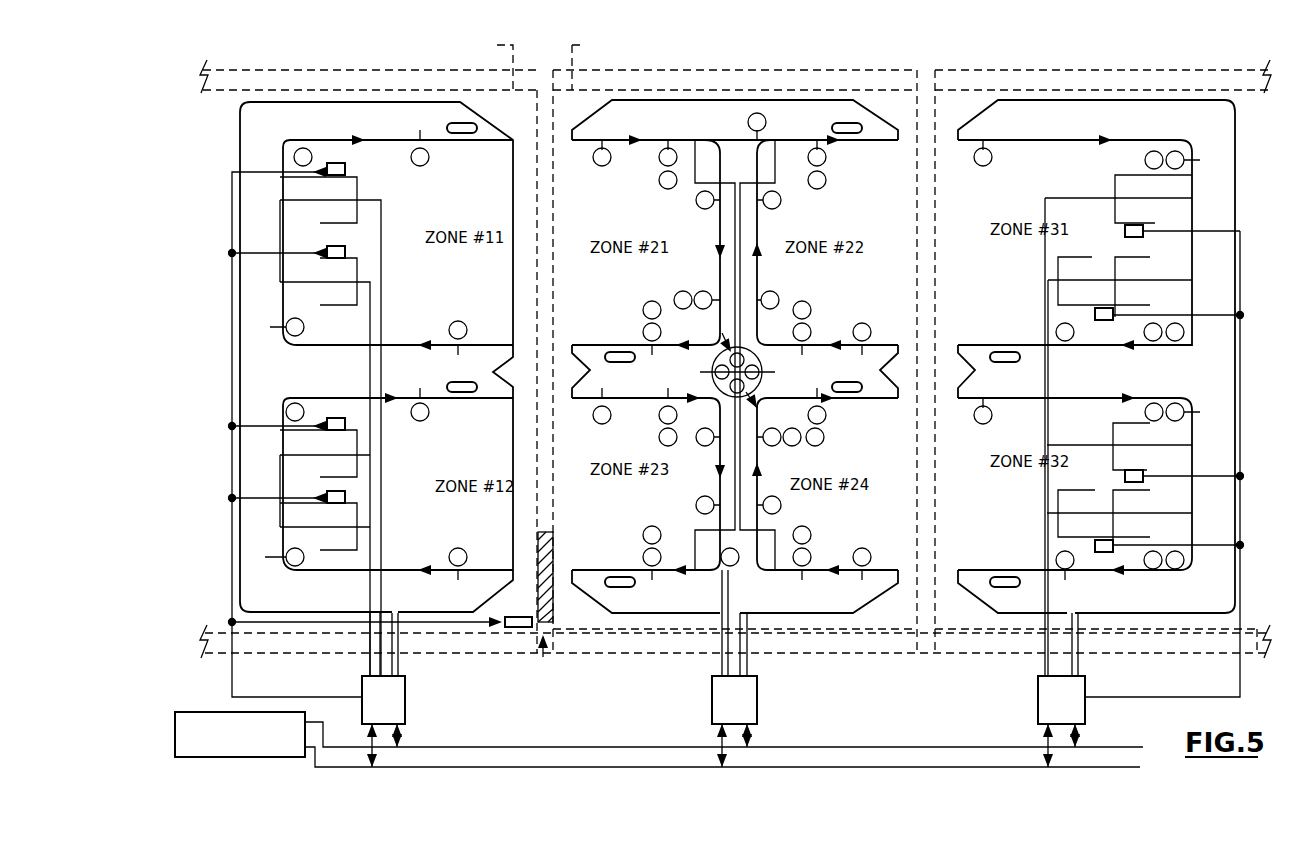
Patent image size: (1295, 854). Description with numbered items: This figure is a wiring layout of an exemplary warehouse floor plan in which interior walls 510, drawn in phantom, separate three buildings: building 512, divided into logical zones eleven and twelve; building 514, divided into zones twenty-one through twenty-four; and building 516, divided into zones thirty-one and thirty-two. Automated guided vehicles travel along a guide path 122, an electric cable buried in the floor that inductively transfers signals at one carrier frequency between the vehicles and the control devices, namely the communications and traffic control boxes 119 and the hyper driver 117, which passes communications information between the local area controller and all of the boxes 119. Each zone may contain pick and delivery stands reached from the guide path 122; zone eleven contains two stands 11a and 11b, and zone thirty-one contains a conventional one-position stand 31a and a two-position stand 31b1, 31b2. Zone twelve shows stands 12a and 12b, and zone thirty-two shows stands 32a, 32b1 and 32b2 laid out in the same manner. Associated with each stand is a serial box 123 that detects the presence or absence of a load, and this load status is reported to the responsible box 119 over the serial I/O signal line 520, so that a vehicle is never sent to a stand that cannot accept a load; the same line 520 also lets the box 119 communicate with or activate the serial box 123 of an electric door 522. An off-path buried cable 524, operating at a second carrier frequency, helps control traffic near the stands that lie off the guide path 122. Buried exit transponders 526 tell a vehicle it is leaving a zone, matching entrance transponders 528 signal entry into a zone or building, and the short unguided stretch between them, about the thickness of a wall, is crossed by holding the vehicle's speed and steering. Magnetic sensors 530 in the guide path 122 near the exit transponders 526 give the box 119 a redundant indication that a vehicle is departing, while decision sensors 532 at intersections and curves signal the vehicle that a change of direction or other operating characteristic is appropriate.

The walls 510 is at (228, 95).
The building 512 is at (250, 385).
The building 514 is at (655, 620).
The building 516 is at (1220, 500).
The serial I/O signal line 520 is at (232, 172).
The electric door 522 is at (555, 540).
The off-path buried cable 524 is at (240, 255).
The exit transponders 526 is at (462, 135).
The entrance transponders 528 is at (460, 318).
The magnetic sensors 530 is at (425, 168).
The decision sensors or transponders 532 is at (292, 146).
The guide path 122 is at (462, 102).
The serial box 123 is at (333, 247).
The hyper driver 117 is at (222, 712).
The communications and traffic control box 119 is at (405, 700).
The P & D stand 11a is at (357, 192).
The P & D stand 11b is at (357, 268).
The room 12a is at (357, 482).
The room 12b is at (357, 508).
The one-position P & D stand 31a is at (1130, 172).
The two-position P & D stand 31b1 is at (1058, 258).
The two-position P & D stand 31b2 is at (1130, 258).
The room 32a is at (1115, 423).
The room 32b1 is at (1075, 492).
The room 32b2 is at (1130, 490).